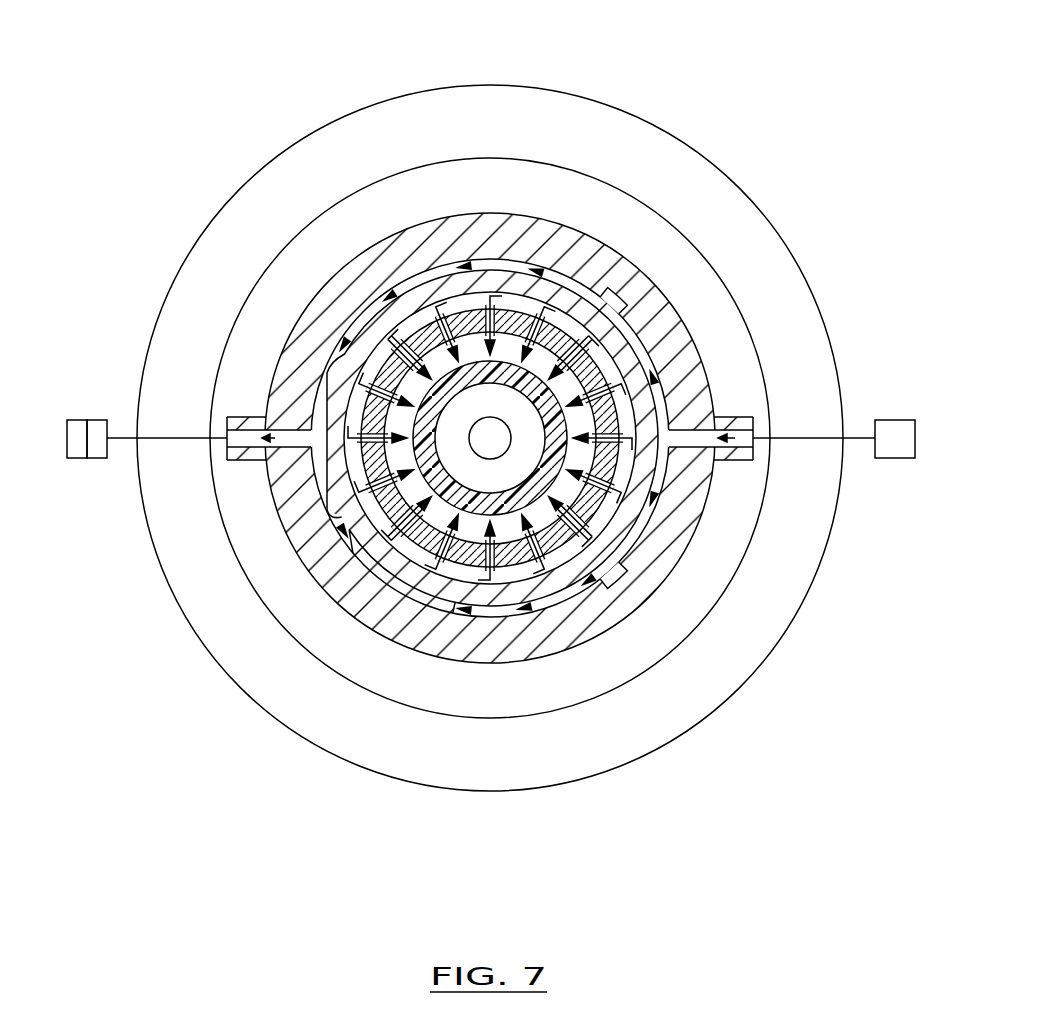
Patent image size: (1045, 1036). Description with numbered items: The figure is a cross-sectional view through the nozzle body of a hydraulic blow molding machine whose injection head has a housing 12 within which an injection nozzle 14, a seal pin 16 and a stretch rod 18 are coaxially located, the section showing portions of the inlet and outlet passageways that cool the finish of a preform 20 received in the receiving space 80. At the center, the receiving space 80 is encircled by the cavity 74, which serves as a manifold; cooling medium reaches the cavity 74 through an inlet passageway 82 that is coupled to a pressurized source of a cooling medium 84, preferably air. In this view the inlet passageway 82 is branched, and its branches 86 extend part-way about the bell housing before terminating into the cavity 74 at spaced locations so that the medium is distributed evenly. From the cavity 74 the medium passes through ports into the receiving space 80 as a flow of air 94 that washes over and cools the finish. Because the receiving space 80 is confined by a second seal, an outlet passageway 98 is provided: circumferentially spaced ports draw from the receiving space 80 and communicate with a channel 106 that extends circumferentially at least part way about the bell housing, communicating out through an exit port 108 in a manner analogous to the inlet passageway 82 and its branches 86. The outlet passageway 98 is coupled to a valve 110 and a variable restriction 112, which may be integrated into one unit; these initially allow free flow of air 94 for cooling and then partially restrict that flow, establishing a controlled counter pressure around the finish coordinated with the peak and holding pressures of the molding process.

The housing 12 is at (500, 118).
The injection nozzle 14 is at (565, 185).
The seal pin 16 is at (650, 318).
The stretch rod 18 is at (489, 447).
The preform 20 is at (400, 565).
The cavity 74 is at (573, 558).
The receiving space 80 is at (468, 346).
The inlet passageway 82 is at (738, 422).
The pressurized source of a cooling medium 84 is at (898, 420).
The branches 86 is at (650, 362).
The flow of air 94 is at (713, 462).
The outlet passageway 98 is at (318, 507).
The channel 106 is at (373, 303).
The exit port 108 is at (250, 415).
The valve 110 is at (95, 447).
The variable restriction 112 is at (74, 438).